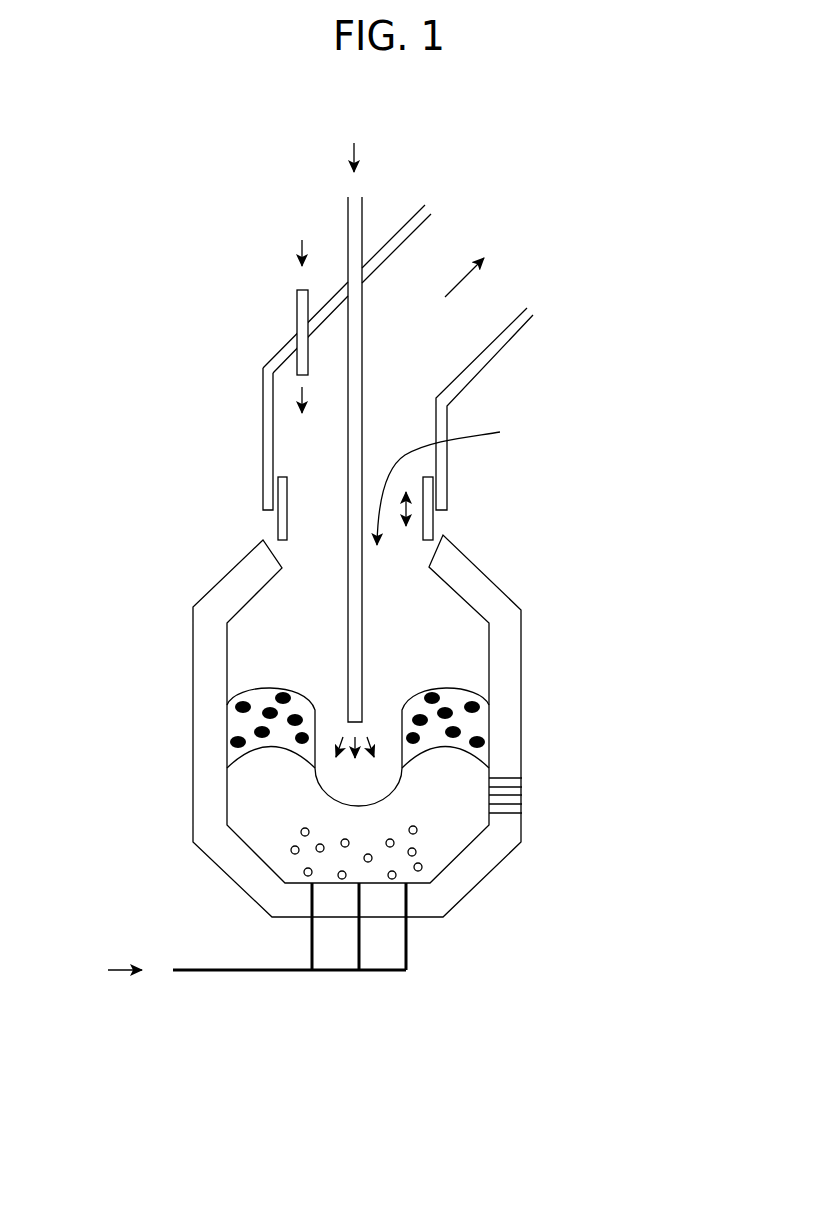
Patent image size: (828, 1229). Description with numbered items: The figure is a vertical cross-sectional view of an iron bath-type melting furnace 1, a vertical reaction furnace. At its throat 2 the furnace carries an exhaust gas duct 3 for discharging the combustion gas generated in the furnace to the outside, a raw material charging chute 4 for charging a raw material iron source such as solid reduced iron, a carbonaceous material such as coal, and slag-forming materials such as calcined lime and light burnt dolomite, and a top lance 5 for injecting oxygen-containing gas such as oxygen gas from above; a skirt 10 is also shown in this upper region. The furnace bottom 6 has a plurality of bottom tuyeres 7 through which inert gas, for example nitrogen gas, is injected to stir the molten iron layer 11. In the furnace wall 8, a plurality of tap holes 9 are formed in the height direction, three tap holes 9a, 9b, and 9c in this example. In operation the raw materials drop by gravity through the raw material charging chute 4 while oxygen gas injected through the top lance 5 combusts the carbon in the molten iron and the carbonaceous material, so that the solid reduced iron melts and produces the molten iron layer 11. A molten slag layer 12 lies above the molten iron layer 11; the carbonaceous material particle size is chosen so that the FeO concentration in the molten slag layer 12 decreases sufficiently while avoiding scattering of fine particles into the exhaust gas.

The iron bath-type melting furnace 1 is at (598, 698).
The throat 2 is at (448, 482).
The exhaust gas duct 3 is at (508, 342).
The raw material charging chute 4 is at (297, 295).
The top lance 5 is at (362, 207).
The furnace bottom 6 is at (433, 918).
The bottom tuyere 7 is at (360, 945).
The furnace wall 8 is at (521, 649).
The tap hole 9 is at (600, 745).
The tap hole 9a is at (522, 782).
The tap hole 9b is at (522, 793).
The tap hole 9c is at (522, 810).
The skirt 10 is at (433, 528).
The molten iron layer 11 is at (455, 840).
The molten slag layer 12 is at (238, 725).